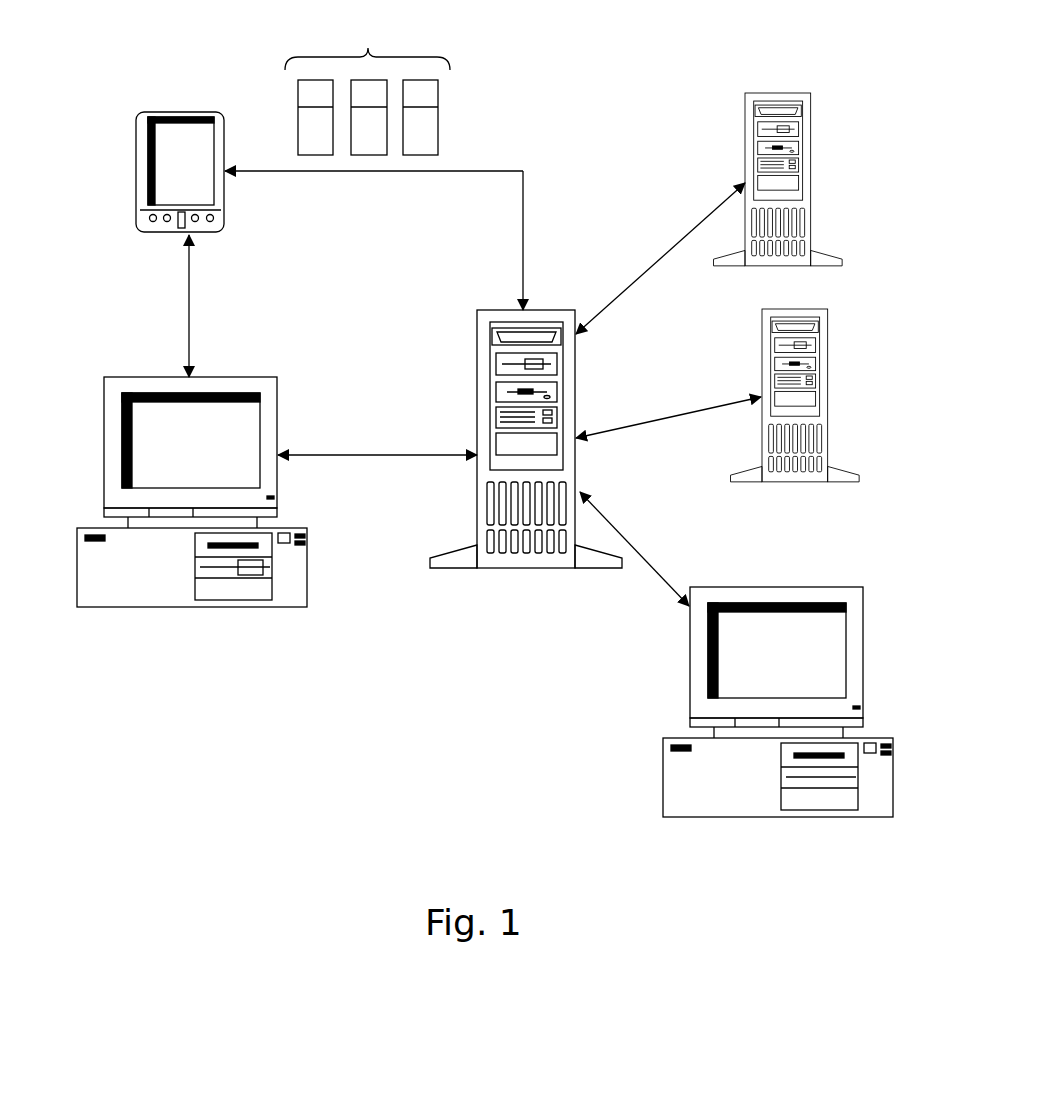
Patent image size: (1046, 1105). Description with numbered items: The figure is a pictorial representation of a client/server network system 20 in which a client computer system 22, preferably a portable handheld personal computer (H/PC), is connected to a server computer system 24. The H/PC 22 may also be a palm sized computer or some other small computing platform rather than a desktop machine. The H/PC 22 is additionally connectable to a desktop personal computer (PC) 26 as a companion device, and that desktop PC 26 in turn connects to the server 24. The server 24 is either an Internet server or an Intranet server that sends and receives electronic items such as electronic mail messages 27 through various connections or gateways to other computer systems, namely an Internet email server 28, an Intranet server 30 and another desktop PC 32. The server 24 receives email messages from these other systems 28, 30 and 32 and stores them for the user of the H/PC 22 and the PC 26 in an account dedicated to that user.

The client/server network system 20 is at (380, 730).
The client computer system 22 is at (215, 199).
The server computer system 24 is at (477, 397).
The desktop personal computer 26 is at (302, 568).
The electronic mail messages 27 is at (415, 148).
The Internet email server 28 is at (822, 408).
The Intranet server 30 is at (807, 190).
The desktop PC 32 is at (672, 796).